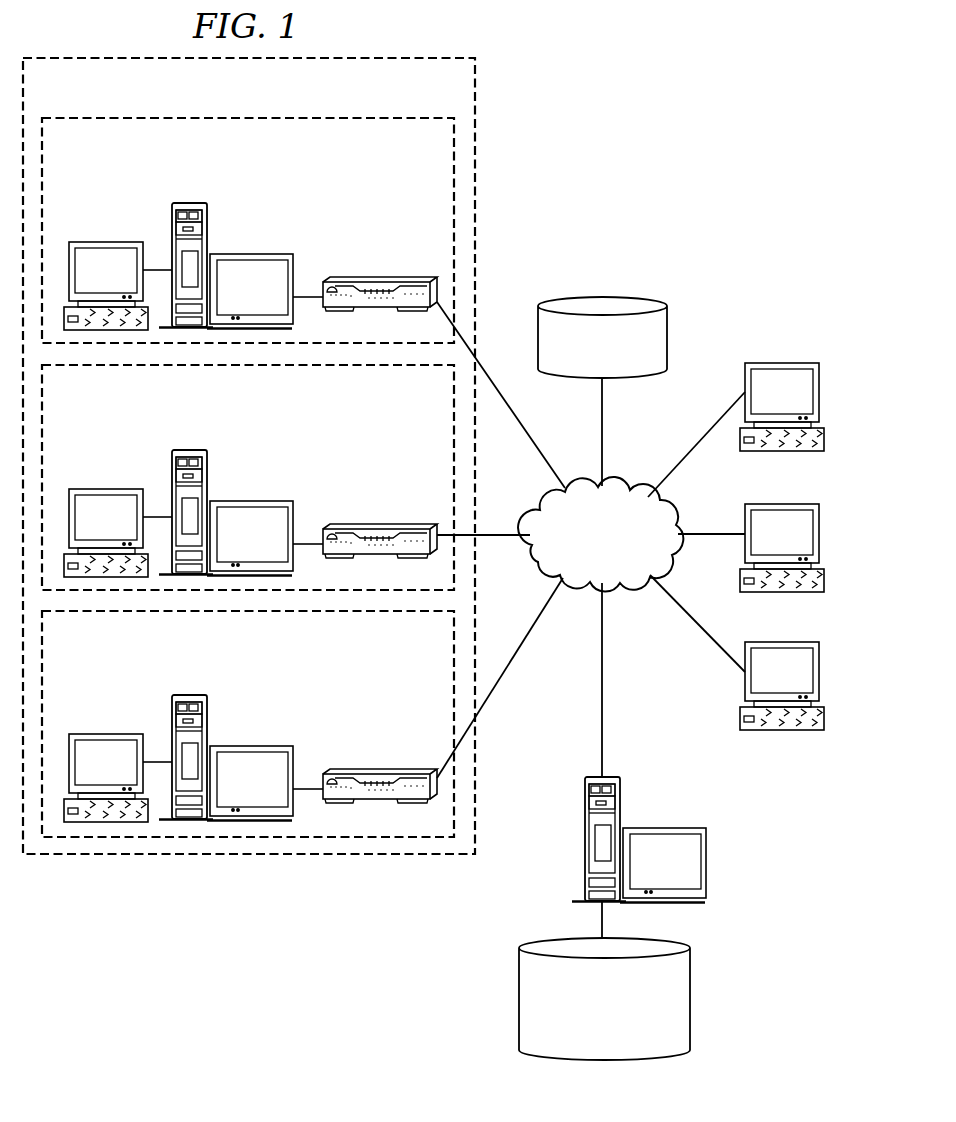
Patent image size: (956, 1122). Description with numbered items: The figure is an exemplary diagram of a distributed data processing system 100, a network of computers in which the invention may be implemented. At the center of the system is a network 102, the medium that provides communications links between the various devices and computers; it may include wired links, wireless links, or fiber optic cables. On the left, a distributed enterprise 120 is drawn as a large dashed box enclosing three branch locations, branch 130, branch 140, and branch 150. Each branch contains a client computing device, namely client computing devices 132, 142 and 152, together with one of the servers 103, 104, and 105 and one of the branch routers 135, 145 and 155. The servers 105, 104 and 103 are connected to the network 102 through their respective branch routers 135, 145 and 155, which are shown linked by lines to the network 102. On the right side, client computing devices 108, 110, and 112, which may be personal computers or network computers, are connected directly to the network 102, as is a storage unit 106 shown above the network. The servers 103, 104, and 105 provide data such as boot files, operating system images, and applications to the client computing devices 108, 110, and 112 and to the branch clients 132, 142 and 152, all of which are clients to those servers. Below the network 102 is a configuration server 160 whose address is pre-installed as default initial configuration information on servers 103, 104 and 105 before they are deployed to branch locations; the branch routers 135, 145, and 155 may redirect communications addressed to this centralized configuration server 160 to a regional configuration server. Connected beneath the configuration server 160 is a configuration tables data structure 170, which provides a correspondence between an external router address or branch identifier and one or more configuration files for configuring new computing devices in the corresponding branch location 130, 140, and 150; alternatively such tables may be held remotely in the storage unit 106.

The distributed data processing system 100 is at (742, 184).
The network 102 is at (630, 486).
The server 103 is at (257, 718).
The server 104 is at (257, 473).
The server 105 is at (257, 226).
The storage unit 106 is at (600, 296).
The client computing device 108 is at (818, 393).
The client computing device 110 is at (818, 532).
The client computing device 112 is at (818, 670).
The distributed enterprise 120 is at (189, 863).
The branch 130 is at (372, 157).
The client computing device 132 is at (102, 241).
The branch router 135 is at (383, 281).
The branch 140 is at (372, 404).
The client computing device 142 is at (102, 488).
The branch router 145 is at (383, 528).
The branch 150 is at (372, 650).
The client computing device 152 is at (102, 733).
The branch router 155 is at (383, 773).
The configuration server 160 is at (707, 853).
The configuration tables data structure 170 is at (690, 1003).